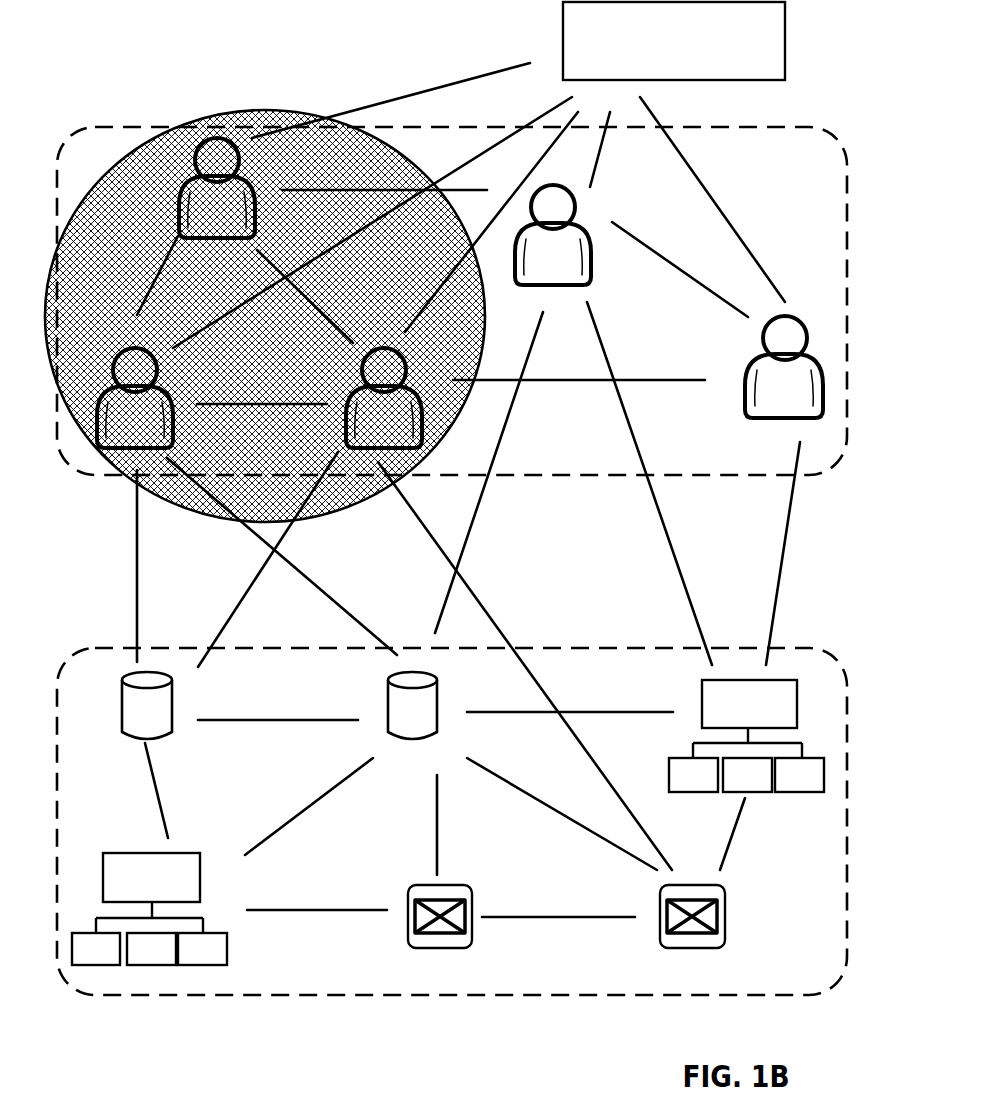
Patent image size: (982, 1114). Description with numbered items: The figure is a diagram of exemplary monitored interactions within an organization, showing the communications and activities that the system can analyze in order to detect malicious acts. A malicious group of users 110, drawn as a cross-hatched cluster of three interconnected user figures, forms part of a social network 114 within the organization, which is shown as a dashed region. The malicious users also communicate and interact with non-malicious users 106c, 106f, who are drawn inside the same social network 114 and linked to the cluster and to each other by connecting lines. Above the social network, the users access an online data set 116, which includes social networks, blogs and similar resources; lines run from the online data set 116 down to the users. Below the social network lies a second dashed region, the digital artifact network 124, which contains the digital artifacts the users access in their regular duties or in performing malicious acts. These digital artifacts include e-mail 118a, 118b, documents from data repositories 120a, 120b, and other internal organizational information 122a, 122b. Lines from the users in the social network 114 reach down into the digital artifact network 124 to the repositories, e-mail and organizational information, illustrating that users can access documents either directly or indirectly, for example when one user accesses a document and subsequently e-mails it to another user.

The malicious group of users 110 is at (128, 153).
The non-malicious user 106c is at (592, 262).
The non-malicious user 106f is at (810, 355).
The social network 114 is at (540, 477).
The online data set 116 is at (674, 41).
The e-mail 118a is at (408, 917).
The e-mail 118b is at (660, 917).
The data repository 120a is at (122, 710).
The data repository 120b is at (388, 710).
The internal organizational information 122a is at (768, 809).
The internal organizational information 122b is at (203, 978).
The digital artifact network 124 is at (532, 995).